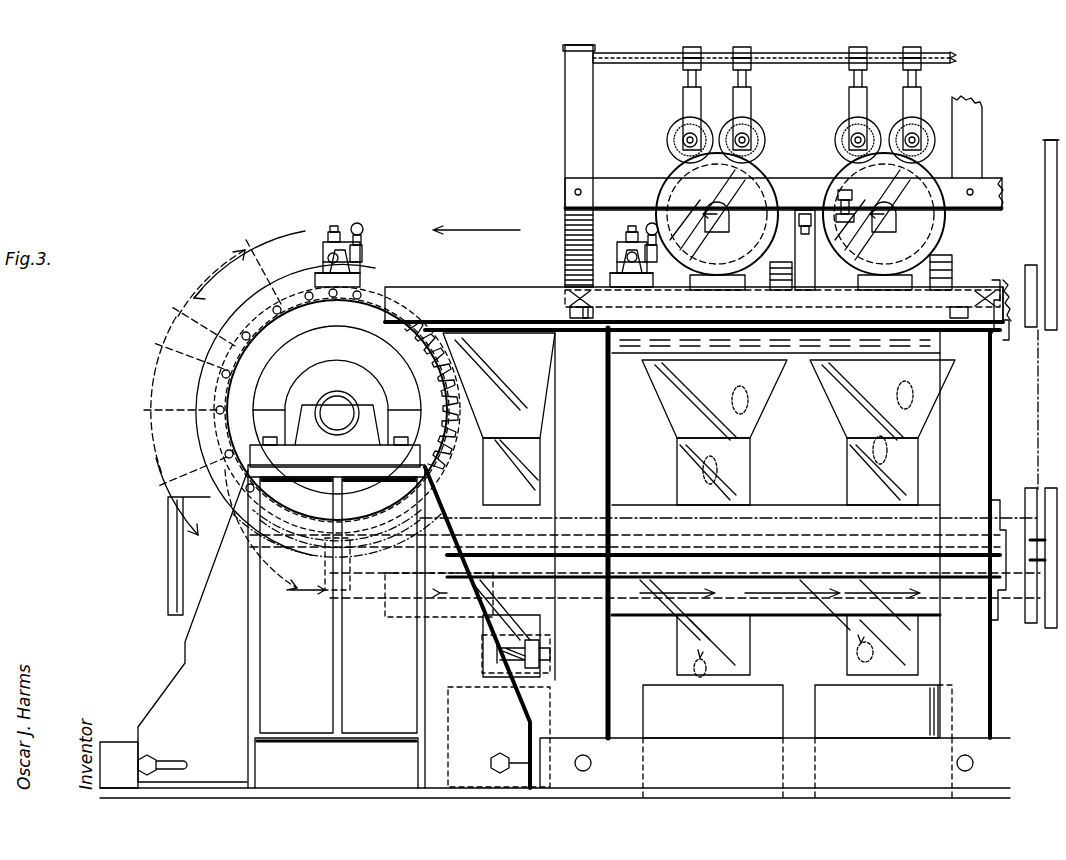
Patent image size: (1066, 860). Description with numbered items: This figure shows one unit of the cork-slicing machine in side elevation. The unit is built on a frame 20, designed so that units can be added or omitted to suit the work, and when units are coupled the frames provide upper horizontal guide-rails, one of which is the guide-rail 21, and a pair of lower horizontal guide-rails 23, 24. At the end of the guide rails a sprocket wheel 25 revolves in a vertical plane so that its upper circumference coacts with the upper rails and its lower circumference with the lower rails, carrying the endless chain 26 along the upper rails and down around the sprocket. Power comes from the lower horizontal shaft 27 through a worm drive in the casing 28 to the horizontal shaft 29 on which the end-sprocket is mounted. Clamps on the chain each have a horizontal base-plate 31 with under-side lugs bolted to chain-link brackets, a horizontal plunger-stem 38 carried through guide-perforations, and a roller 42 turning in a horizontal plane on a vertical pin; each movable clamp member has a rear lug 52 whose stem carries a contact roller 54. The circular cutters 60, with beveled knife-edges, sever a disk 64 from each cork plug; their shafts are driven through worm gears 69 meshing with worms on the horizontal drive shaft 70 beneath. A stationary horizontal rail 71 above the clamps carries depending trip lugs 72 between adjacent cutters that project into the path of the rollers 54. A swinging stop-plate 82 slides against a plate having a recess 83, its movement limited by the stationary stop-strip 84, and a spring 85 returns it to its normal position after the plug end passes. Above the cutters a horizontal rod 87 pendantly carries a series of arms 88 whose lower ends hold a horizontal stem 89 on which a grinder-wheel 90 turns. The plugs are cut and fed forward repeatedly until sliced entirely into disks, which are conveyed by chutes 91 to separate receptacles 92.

The frame 20 is at (598, 456).
The upper horizontal guide-rail 21 is at (482, 297).
The lower horizontal guide-rail 23 is at (778, 515).
The lower horizontal guide-rail 24 is at (800, 610).
The sprocket wheel 25 is at (440, 390).
The endless chain 26 is at (240, 343).
The lower horizontal shaft 27 is at (374, 567).
The casing 28 is at (305, 532).
The horizontal shaft 29 is at (333, 422).
The base-plate 31 is at (362, 280).
The plunger-stem 38 is at (322, 262).
The roller 42 is at (332, 238).
The lug 52 is at (363, 250).
The contact roller 54 is at (362, 228).
The cutter 60 is at (800, 221).
The disk 64 is at (700, 677).
The worm gear 69 is at (668, 190).
The horizontal drive shaft 70 is at (1007, 292).
The horizontal rail 71 is at (726, 199).
The trip lug 72 is at (889, 199).
The stop-plate 82 is at (828, 228).
The recess 83 is at (795, 268).
The stationary stop-strip 84 is at (790, 262).
The spring 85 is at (782, 212).
The horizontal rod 87 is at (650, 66).
The arm 88 is at (735, 96).
The horizontal stem 89 is at (748, 122).
The grinder-wheel 90 is at (667, 137).
The chute 91 is at (538, 420).
The receptacle 92 is at (518, 708).